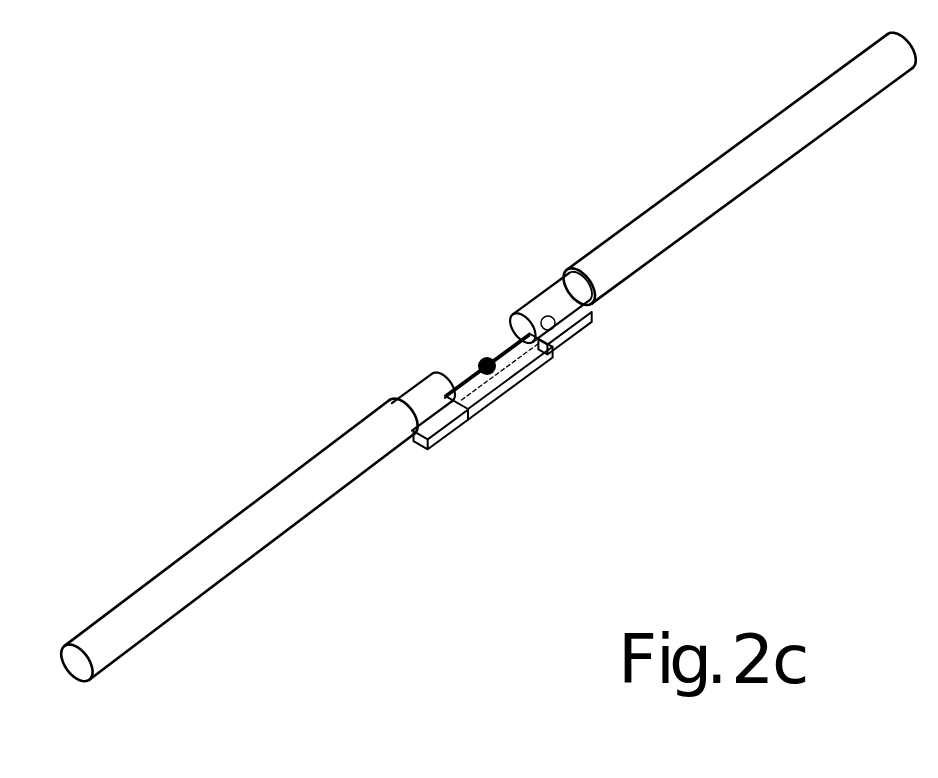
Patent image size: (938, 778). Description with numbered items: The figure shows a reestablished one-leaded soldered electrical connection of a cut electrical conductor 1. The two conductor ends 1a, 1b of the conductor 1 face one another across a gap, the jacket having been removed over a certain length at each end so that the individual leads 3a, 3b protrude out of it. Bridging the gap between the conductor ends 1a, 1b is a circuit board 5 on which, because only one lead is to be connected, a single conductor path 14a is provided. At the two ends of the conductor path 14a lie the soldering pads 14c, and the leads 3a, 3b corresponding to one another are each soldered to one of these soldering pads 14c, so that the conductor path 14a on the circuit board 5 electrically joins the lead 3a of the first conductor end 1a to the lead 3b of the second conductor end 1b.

The electrical conductor 1 is at (688, 163).
The conductor end 1a is at (401, 379).
The conductor end 1b is at (530, 283).
The individual lead 3a is at (385, 402).
The individual lead 3b is at (499, 318).
The circuit board 5 is at (492, 398).
The conductor path 14a is at (507, 375).
The soldering pad 14c is at (605, 318).